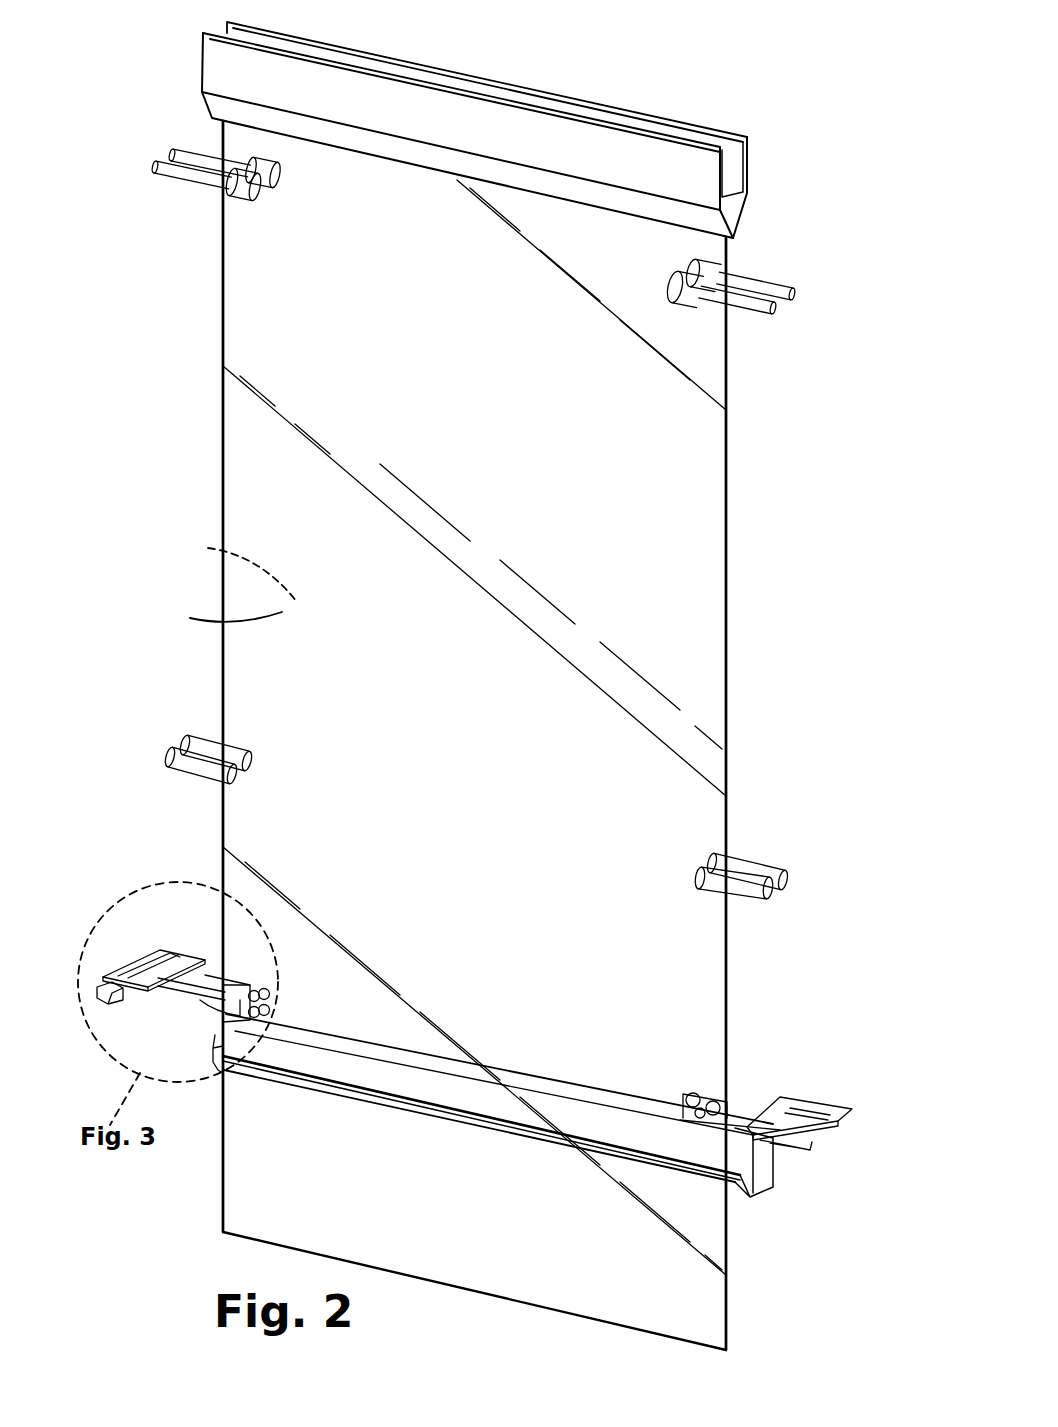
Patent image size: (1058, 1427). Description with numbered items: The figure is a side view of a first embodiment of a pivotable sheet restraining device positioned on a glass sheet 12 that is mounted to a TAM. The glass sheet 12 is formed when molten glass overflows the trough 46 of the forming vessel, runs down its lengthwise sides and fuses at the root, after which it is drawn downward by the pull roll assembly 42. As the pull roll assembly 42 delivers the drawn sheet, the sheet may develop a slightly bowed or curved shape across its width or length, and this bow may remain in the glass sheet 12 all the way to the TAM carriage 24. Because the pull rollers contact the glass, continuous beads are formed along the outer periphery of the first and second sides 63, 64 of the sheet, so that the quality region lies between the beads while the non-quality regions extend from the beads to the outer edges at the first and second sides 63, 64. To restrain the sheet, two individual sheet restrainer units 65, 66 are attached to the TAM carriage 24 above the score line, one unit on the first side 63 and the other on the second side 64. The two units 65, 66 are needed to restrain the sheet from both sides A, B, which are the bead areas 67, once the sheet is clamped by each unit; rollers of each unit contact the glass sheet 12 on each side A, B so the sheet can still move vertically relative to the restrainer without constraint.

The glass sheet 12 is at (665, 975).
The TAM carriage 24 is at (843, 1142).
The pull roll assembly 42 is at (798, 312).
The trough 46 is at (698, 175).
The first side 63 is at (221, 459).
The second side 64 is at (727, 510).
The sheet restrainer unit 65 is at (165, 995).
The sheet restrainer unit 66 is at (750, 1093).
The bead areas 67 is at (660, 650).
The side A is at (227, 615).
The side B is at (244, 569).